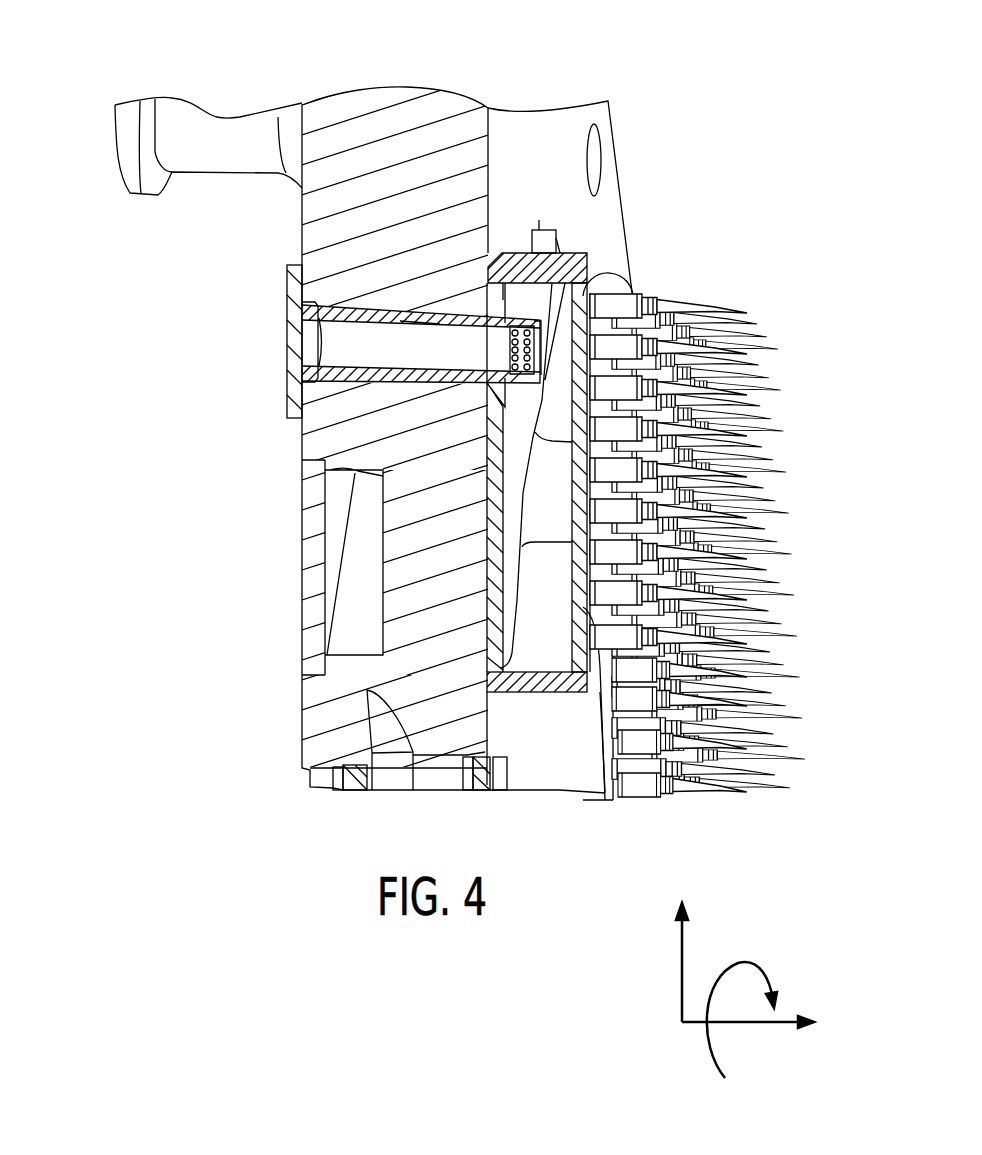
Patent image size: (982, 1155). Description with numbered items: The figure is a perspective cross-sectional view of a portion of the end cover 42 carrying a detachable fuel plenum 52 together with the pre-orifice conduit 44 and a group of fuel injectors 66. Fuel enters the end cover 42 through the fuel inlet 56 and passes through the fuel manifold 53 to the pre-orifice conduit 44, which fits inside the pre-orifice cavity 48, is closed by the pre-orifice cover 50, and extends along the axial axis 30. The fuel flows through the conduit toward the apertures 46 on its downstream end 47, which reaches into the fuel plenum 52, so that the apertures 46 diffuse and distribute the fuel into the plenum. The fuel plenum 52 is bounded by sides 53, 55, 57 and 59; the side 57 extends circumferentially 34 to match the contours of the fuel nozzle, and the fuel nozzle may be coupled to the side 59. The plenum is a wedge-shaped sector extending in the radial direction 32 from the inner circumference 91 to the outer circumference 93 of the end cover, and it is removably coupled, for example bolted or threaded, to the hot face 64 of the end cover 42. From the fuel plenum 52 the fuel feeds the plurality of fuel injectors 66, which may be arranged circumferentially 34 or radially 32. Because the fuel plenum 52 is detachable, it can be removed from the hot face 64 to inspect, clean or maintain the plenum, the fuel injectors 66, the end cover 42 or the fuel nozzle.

The axial axis 30 is at (742, 1023).
The radial direction 32 is at (682, 968).
The circumferential direction 34 is at (708, 1046).
The end cover 42 is at (578, 66).
The pre-orifice conduit 44 is at (337, 352).
The apertures 46 is at (510, 362).
The downstream end 47 is at (447, 332).
The pre-orifice cavity 48 is at (355, 383).
The pre-orifice cover 50 is at (282, 328).
The fuel plenum 52 is at (542, 655).
The fuel manifold 53 is at (348, 588).
The side 55 is at (562, 772).
The fuel inlet 56 is at (98, 126).
The side 57 is at (507, 265).
The side 59 is at (570, 310).
The hot face 64 is at (607, 205).
The fuel injectors 66 is at (725, 777).
The inner circumference 91 is at (603, 763).
The outer circumference 93 is at (610, 280).